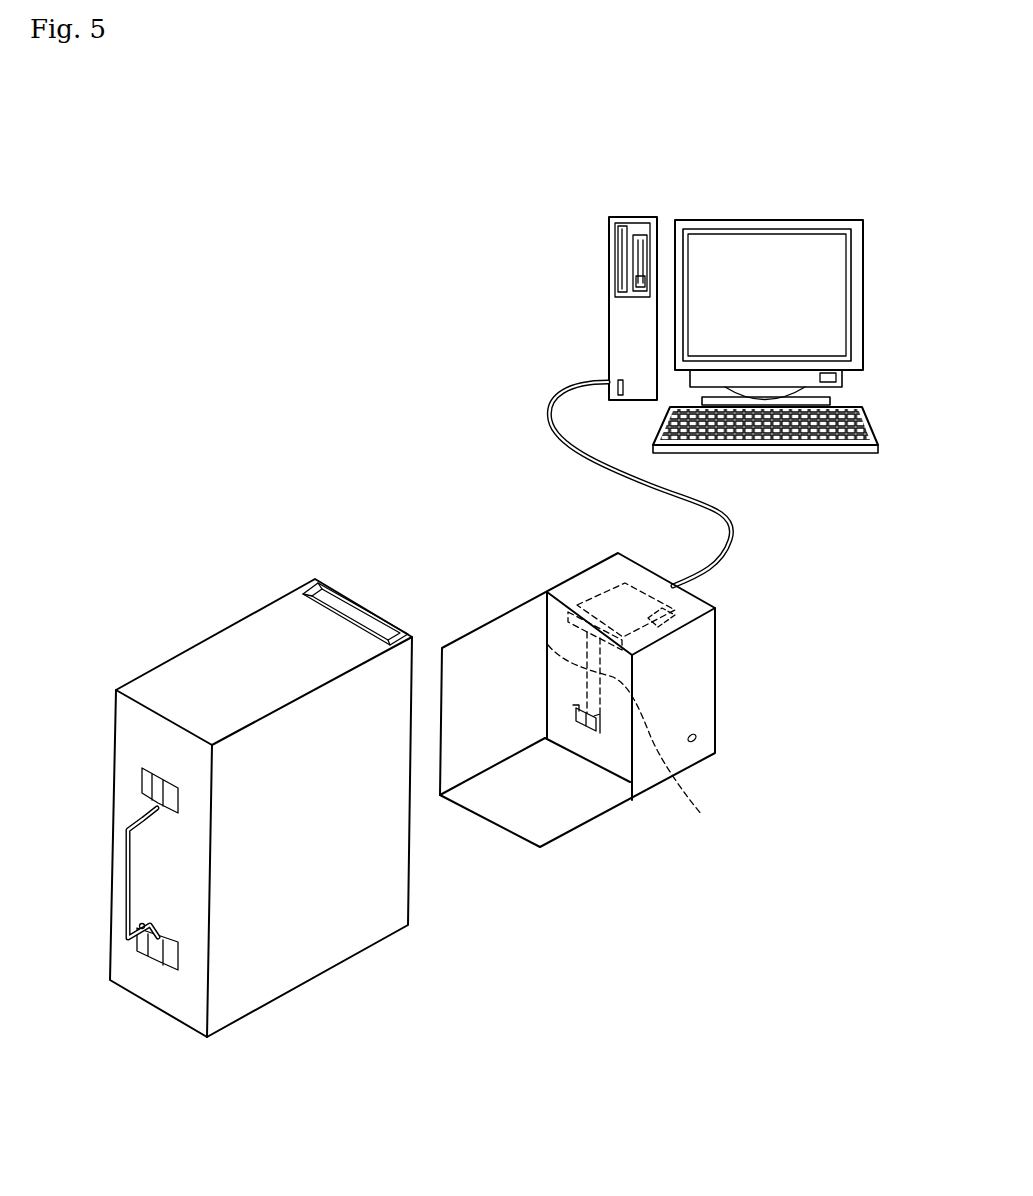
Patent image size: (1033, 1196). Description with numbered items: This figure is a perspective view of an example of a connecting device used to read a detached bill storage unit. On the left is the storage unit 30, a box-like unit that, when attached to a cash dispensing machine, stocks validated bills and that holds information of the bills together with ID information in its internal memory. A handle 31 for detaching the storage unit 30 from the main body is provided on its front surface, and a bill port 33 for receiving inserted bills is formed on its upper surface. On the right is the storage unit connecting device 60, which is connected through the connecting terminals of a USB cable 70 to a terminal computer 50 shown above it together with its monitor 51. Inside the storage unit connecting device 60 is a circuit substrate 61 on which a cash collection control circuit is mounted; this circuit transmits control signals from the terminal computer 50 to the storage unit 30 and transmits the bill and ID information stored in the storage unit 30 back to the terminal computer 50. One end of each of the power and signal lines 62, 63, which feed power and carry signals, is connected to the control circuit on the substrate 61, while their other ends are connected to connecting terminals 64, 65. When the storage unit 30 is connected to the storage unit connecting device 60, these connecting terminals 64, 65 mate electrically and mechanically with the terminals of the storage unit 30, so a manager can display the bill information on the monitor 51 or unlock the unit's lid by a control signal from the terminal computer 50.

The storage unit 30 is at (230, 614).
The handle 31 is at (137, 813).
The bill port 33 is at (345, 607).
The terminal computer 50 is at (585, 237).
The monitor 51 is at (718, 218).
The storage unit connecting device 60 is at (742, 701).
The circuit substrate 61 is at (675, 640).
The power and signal line 62 is at (548, 645).
The power and signal line 63 is at (645, 745).
The connecting terminal 64 is at (581, 720).
The connecting terminal 65 is at (597, 722).
The USB cable 70 is at (731, 523).